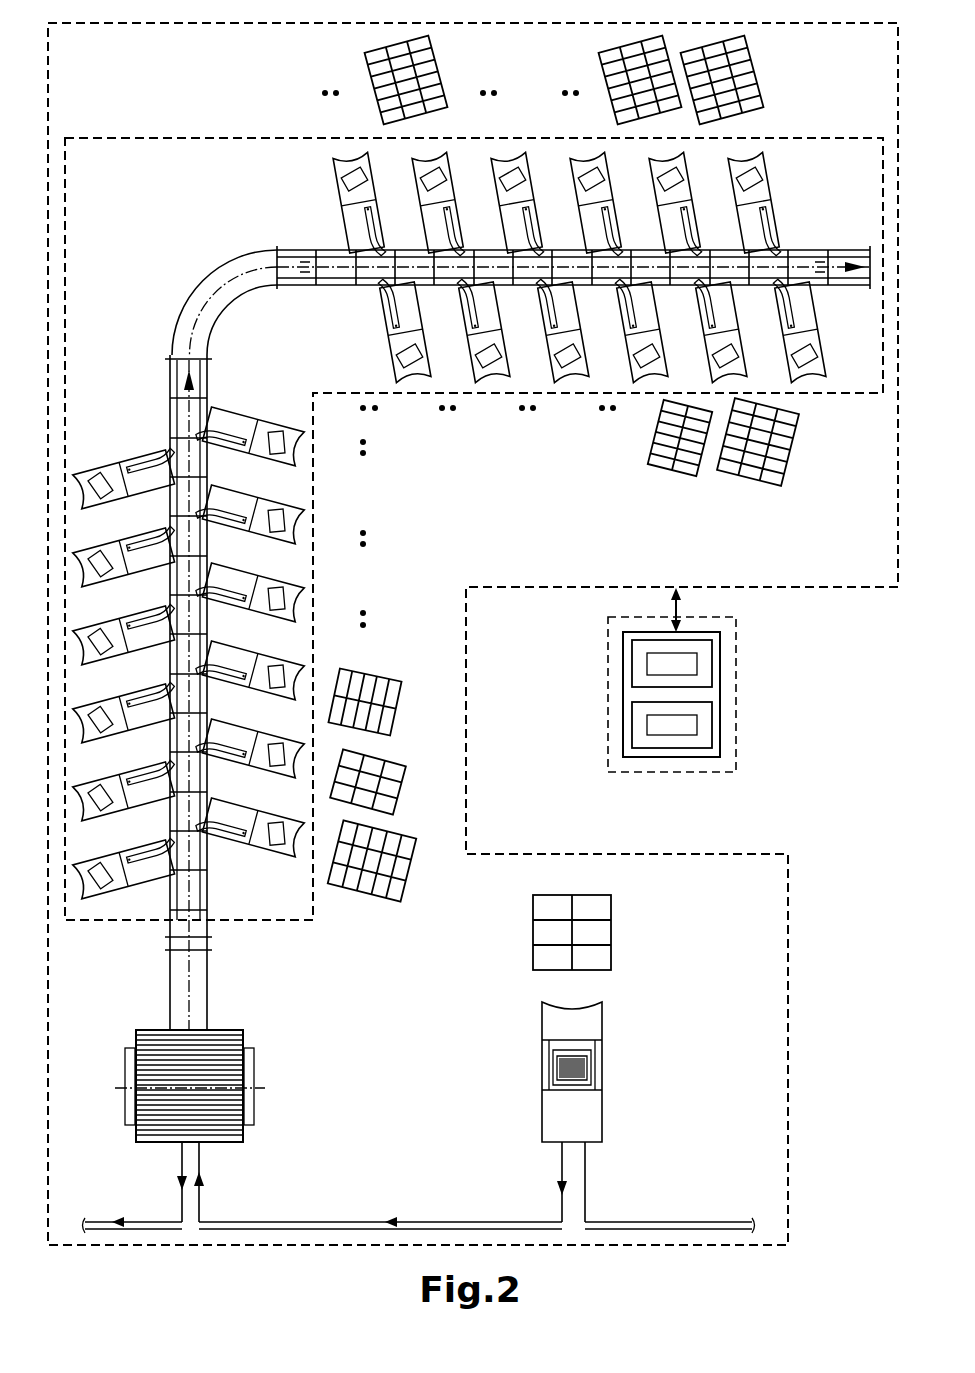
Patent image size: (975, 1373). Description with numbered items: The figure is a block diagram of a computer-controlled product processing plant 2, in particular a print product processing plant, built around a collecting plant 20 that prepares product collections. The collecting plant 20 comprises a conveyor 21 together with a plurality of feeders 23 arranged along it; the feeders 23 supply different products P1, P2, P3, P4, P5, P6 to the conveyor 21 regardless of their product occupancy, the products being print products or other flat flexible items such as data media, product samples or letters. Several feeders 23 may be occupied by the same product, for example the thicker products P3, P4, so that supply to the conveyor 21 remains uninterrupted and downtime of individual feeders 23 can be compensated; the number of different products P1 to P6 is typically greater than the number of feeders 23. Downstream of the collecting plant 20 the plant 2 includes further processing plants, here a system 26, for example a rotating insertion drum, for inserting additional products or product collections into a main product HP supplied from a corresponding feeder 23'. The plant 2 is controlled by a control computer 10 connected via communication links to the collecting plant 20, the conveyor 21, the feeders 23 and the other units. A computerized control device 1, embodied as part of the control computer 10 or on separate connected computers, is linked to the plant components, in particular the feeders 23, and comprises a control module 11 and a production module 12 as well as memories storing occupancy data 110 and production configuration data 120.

The computer-controlled product processing plant 2 is at (148, 1258).
The collecting plant 20 is at (306, 930).
The conveyor 21 is at (205, 292).
The feeders 23 is at (449, 525).
The feeder 23' is at (622, 1072).
The system for inserting additional products 26 is at (272, 1098).
The control computer 10 is at (612, 626).
The computerized control device 1 is at (643, 765).
The control module 11 is at (640, 683).
The occupancy data 110 is at (650, 661).
The production module 12 is at (690, 758).
The production configuration data 120 is at (670, 731).
The main product HP is at (603, 935).
The product P1 is at (400, 873).
The product P2 is at (395, 791).
The product P3 is at (749, 63).
The product P4 is at (376, 66).
The product P5 is at (397, 698).
The product P6 is at (659, 461).